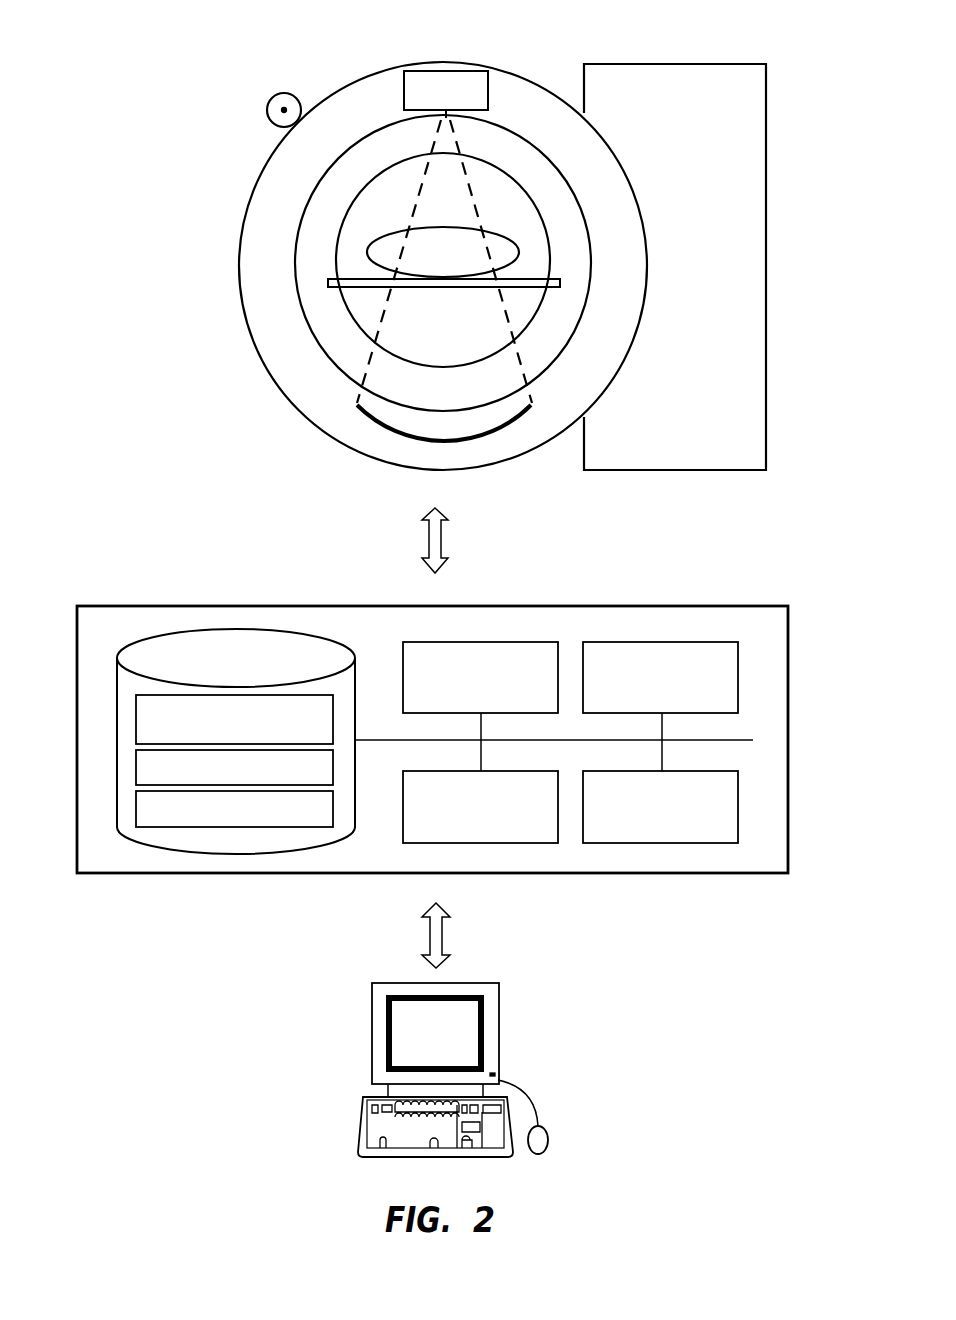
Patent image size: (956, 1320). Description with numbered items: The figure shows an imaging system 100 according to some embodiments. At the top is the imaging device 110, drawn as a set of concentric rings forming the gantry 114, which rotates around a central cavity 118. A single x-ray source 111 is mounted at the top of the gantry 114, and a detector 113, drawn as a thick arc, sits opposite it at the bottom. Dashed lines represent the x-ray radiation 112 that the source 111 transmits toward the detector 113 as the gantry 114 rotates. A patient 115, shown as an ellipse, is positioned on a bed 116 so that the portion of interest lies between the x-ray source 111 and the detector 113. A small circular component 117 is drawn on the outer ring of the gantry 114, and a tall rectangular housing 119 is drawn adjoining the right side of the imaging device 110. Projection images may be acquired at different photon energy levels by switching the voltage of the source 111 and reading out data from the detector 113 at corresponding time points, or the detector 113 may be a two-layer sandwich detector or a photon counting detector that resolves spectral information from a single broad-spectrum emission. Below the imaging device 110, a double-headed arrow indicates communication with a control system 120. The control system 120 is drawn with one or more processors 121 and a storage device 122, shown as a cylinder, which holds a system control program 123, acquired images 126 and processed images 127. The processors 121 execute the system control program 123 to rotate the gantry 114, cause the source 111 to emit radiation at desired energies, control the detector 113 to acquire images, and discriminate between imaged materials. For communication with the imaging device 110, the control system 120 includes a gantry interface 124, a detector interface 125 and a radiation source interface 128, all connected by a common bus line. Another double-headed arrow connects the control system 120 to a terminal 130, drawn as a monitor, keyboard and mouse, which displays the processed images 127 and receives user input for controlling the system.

The system 100 is at (193, 25).
The imaging device 110 is at (518, 235).
The x-ray source 111 is at (404, 102).
The radiation beam 112 is at (455, 155).
The detector 113 is at (414, 441).
The gantry 114 is at (508, 72).
The patient 115 is at (484, 228).
The bed 116 is at (436, 290).
The motor / drive 117 is at (267, 110).
The cavity 118 is at (355, 237).
The cabinet / support structure 119 is at (766, 101).
The controller 120 is at (610, 606).
The processor(s) 121 is at (517, 771).
The memory / data storage 122 is at (326, 647).
The system control program 123 is at (136, 722).
The gantry interface 124 is at (514, 642).
The detector interface 125 is at (692, 771).
The acquired images 126 is at (136, 768).
The processed images 127 is at (136, 810).
The radiation source interface 128 is at (701, 642).
The user interface / workstation 130 is at (545, 1044).